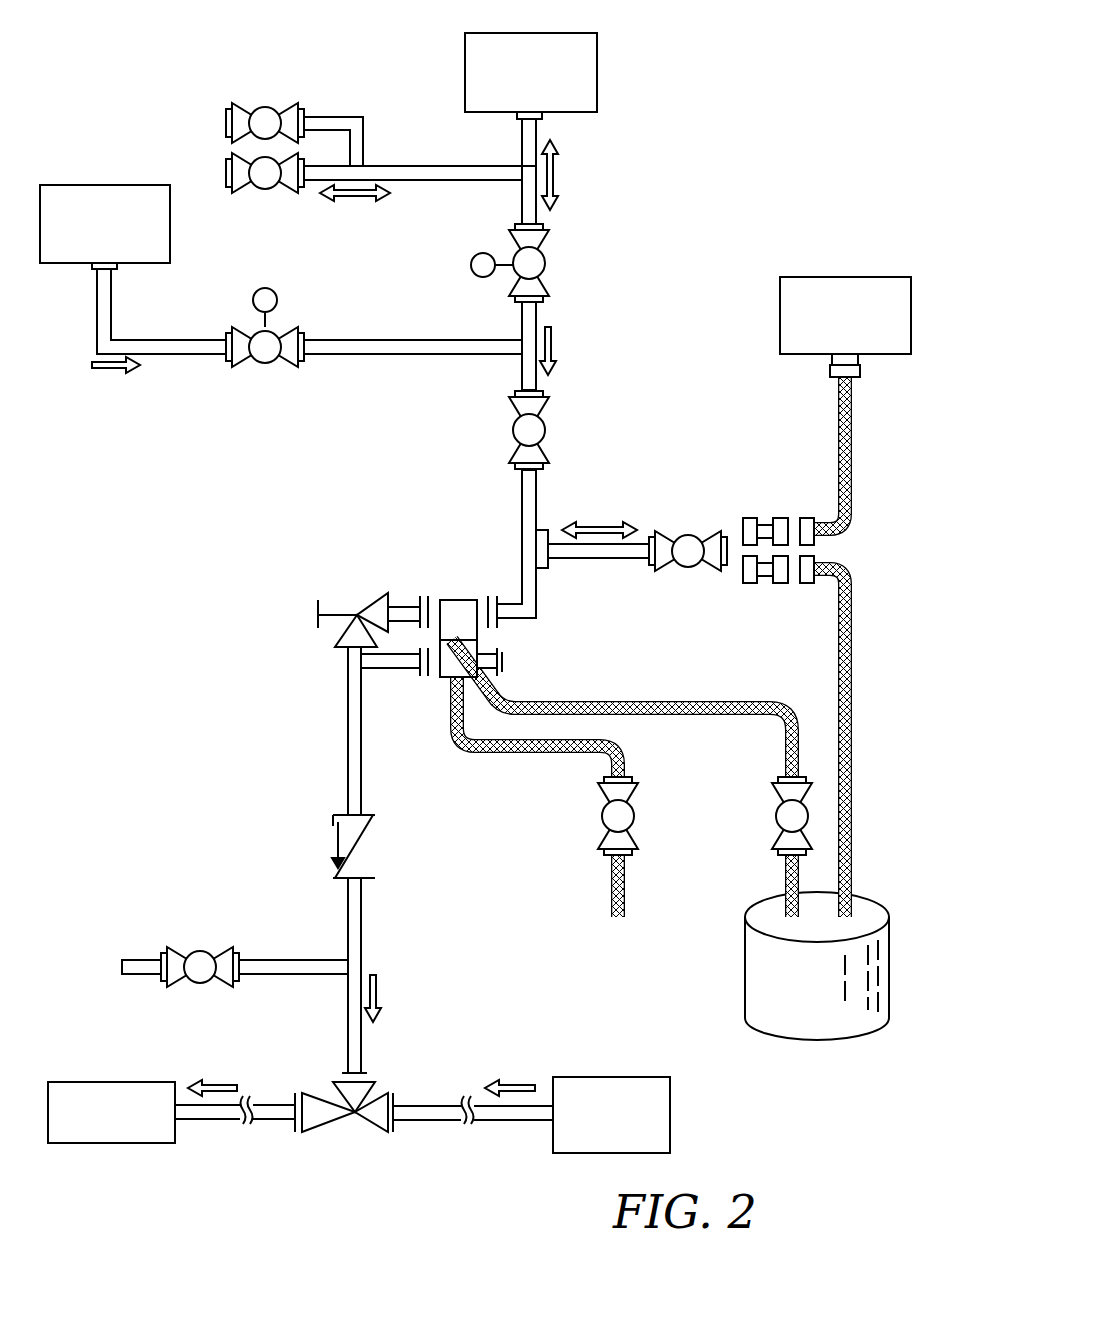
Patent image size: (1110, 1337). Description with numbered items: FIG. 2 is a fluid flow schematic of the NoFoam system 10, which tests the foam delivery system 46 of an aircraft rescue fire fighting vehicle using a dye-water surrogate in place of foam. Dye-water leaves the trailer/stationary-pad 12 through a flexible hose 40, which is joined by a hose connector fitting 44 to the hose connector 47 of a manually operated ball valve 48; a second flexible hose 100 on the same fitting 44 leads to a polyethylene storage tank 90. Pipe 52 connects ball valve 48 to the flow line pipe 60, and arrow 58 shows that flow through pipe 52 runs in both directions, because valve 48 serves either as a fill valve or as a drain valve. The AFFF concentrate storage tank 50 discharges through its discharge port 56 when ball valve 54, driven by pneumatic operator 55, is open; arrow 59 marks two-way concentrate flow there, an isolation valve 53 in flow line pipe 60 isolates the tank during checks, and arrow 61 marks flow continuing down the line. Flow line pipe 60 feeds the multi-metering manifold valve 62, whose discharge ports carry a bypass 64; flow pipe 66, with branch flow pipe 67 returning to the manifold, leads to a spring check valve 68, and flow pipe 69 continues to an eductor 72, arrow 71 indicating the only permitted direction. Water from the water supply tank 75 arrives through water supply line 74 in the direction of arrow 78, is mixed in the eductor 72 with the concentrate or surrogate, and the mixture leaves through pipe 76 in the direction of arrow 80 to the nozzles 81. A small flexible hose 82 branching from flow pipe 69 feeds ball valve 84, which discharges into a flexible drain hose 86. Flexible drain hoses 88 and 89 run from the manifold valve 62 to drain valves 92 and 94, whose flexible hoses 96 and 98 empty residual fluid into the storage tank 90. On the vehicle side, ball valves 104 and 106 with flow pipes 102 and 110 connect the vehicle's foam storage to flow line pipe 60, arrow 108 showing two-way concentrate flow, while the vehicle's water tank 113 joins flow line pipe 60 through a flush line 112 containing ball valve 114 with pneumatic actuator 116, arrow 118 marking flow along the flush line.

The NoFoam system 10 is at (727, 158).
The trailer/stationary-pad 12 is at (830, 283).
The flexible hose 40 is at (838, 420).
The hose connector fitting 44 is at (762, 575).
The foam delivery system 46 is at (295, 576).
The hose connector 47 is at (722, 572).
The ball valve 48 is at (688, 535).
The AFFF concentrate storage tank 50 is at (465, 62).
The pipe 52 is at (600, 565).
The isolation valve 53 is at (545, 430).
The ball valve 54 is at (545, 263).
The pneumatic operator 55 is at (470, 268).
The discharge port 56 is at (517, 120).
The arrow 58 is at (600, 524).
The arrow 59 is at (558, 180).
The flow line pipe 60 is at (522, 208).
The flow direction arrow 61 is at (558, 348).
The multi-metering manifold valve 62 is at (462, 598).
The bypass 64 is at (365, 598).
The flow pipe 66 is at (348, 714).
The flow pipe 67 is at (390, 672).
The spring check valve 68 is at (335, 830).
The flow pipe 69 is at (348, 1040).
The arrow 71 is at (385, 990).
The eductor 72 is at (350, 1125).
The water supply line 74 is at (505, 1122).
The water supply tank 75 is at (560, 1080).
The pipe 76 is at (208, 1122).
The arrow 78 is at (530, 1085).
The arrow 80 is at (235, 1083).
The nozzles 81 is at (72, 1080).
The conduit 82 is at (268, 958).
The ball valve 84 is at (202, 952).
The flexible drain hose 86 is at (128, 958).
The flexible drain hose 88 is at (478, 755).
The flexible drain hose 89 is at (668, 700).
The storage tank 90 is at (750, 972).
The multi-metering manifold drain valve 92 is at (600, 818).
The multi-metering manifold drain valve 94 is at (775, 818).
The flexible hose 96 is at (611, 873).
The flexible hose 98 is at (786, 873).
The flexible hose 100 is at (838, 655).
The flow pipe 102 is at (325, 118).
The ball valve 104 is at (268, 108).
The ball valve 106 is at (268, 190).
The arrow 108 is at (355, 200).
The flow pipe 110 is at (410, 165).
The flush line 112 is at (185, 355).
The water tank 113 is at (63, 187).
The ball valve 114 is at (268, 365).
The pneumatic actuator 116 is at (252, 300).
The flow direction arrow 118 is at (108, 370).